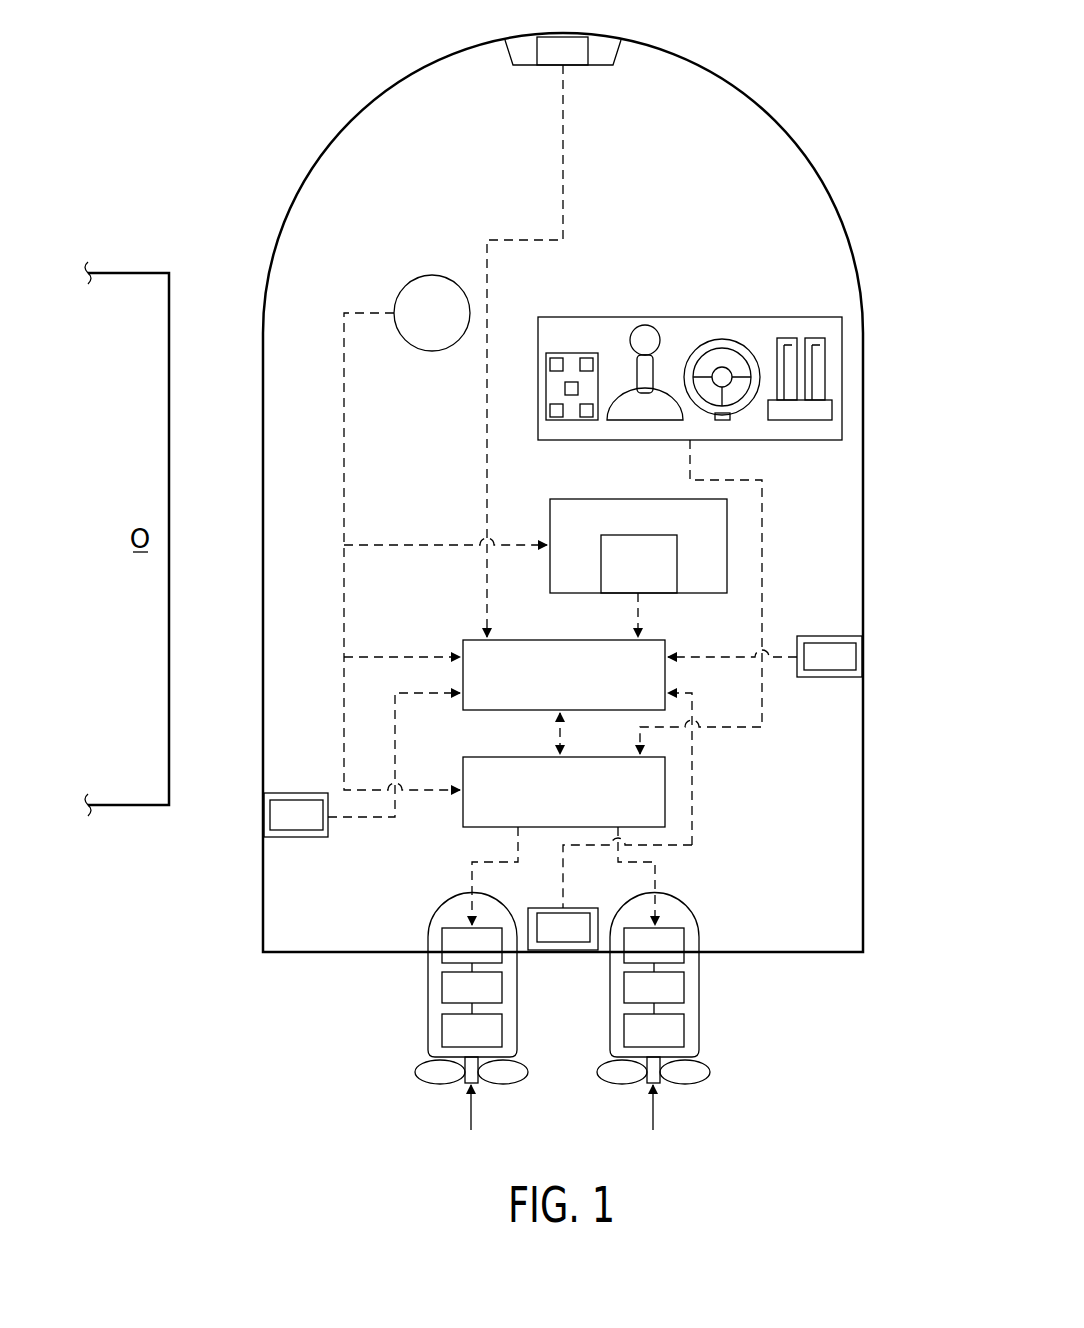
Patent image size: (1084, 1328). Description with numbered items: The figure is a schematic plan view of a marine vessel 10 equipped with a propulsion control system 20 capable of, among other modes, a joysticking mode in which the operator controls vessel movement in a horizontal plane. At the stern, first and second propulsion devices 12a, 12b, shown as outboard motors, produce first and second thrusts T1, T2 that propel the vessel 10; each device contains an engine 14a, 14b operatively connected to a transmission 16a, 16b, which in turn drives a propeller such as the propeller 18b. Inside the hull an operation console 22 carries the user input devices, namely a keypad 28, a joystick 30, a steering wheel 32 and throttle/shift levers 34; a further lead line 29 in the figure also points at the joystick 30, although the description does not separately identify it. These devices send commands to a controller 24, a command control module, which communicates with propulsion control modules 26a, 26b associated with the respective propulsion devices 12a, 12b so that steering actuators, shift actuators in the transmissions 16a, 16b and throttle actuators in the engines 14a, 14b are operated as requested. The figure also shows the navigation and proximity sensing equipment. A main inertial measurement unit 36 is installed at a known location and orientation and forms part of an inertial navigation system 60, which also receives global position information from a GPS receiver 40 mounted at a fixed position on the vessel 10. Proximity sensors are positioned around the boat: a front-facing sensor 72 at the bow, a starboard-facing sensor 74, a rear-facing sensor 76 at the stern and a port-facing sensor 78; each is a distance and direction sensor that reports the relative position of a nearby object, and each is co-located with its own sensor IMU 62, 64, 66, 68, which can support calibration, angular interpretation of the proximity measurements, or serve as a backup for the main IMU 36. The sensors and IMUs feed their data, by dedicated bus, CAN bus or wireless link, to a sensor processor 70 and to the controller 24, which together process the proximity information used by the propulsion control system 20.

The marine vessel 10 is at (842, 217).
The propulsion control system 20 is at (745, 152).
The first propulsion device 12a is at (452, 896).
The second propulsion device 12b is at (673, 896).
The engine 14a is at (442, 985).
The engine 14b is at (684, 985).
The transmission 16a is at (442, 1028).
The transmission 16b is at (415, 1072).
The propeller 18b is at (710, 1072).
The operation console 22 is at (652, 317).
The controller 24 is at (665, 782).
The propulsion control module 26a is at (450, 928).
The propulsion control module 26b is at (678, 928).
The keypad 28 is at (566, 353).
The joystick 29 is at (613, 365).
The joystick 30 is at (655, 372).
The steering wheel 32 is at (722, 339).
The throttle/shift levers 34 is at (787, 338).
The main inertial measurement unit 36 is at (638, 535).
The GPS receiver 40 is at (410, 283).
The inertial navigation system 60 is at (572, 499).
The sensor IMU 62 is at (575, 65).
The sensor IMU 64 is at (817, 643).
The sensor IMU 66 is at (575, 913).
The sensor IMU 68 is at (283, 837).
The sensor processor 70 is at (565, 640).
The front-facing proximity sensor 72 is at (597, 52).
The starboard-facing proximity sensor 74 is at (848, 636).
The rear-facing proximity sensor 76 is at (563, 950).
The port-facing proximity sensor 78 is at (278, 793).
The first thrust T1 is at (471, 1112).
The second thrust T2 is at (653, 1112).